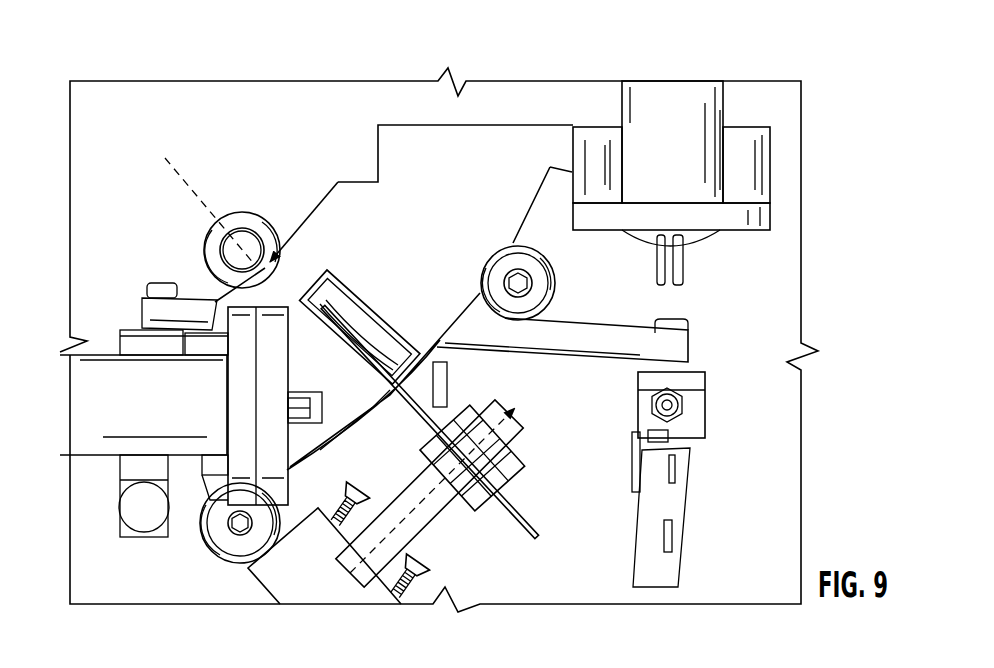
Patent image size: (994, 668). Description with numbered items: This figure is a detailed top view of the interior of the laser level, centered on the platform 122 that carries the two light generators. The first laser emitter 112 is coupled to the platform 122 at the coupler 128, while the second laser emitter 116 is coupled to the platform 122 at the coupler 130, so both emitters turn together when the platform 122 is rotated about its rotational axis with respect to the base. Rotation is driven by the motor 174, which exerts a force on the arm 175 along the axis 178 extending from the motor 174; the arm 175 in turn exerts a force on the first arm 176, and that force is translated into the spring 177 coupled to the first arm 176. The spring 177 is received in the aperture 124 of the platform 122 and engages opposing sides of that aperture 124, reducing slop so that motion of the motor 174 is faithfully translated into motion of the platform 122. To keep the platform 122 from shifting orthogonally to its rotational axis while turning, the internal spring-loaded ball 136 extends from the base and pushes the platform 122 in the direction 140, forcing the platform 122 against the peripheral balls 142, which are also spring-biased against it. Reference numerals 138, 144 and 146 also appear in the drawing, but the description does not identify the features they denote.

The laser emitter 112 is at (690, 112).
The coupler 128 is at (762, 176).
The platform 122 is at (490, 145).
The guide plate 138 is at (296, 221).
The direction 140 is at (178, 186).
The internal spring-loaded ball 136 is at (193, 262).
The laser emitter 116 is at (108, 406).
The coupler 130 is at (262, 463).
The balls 142 is at (549, 307).
The arm 144 is at (548, 243).
The aperture 124 is at (322, 258).
The spring 177 is at (358, 282).
The arm 175 is at (446, 598).
The first arm 176 is at (444, 418).
The axis 178 is at (492, 450).
The cylinder 146 is at (420, 532).
The motor 174 is at (348, 592).